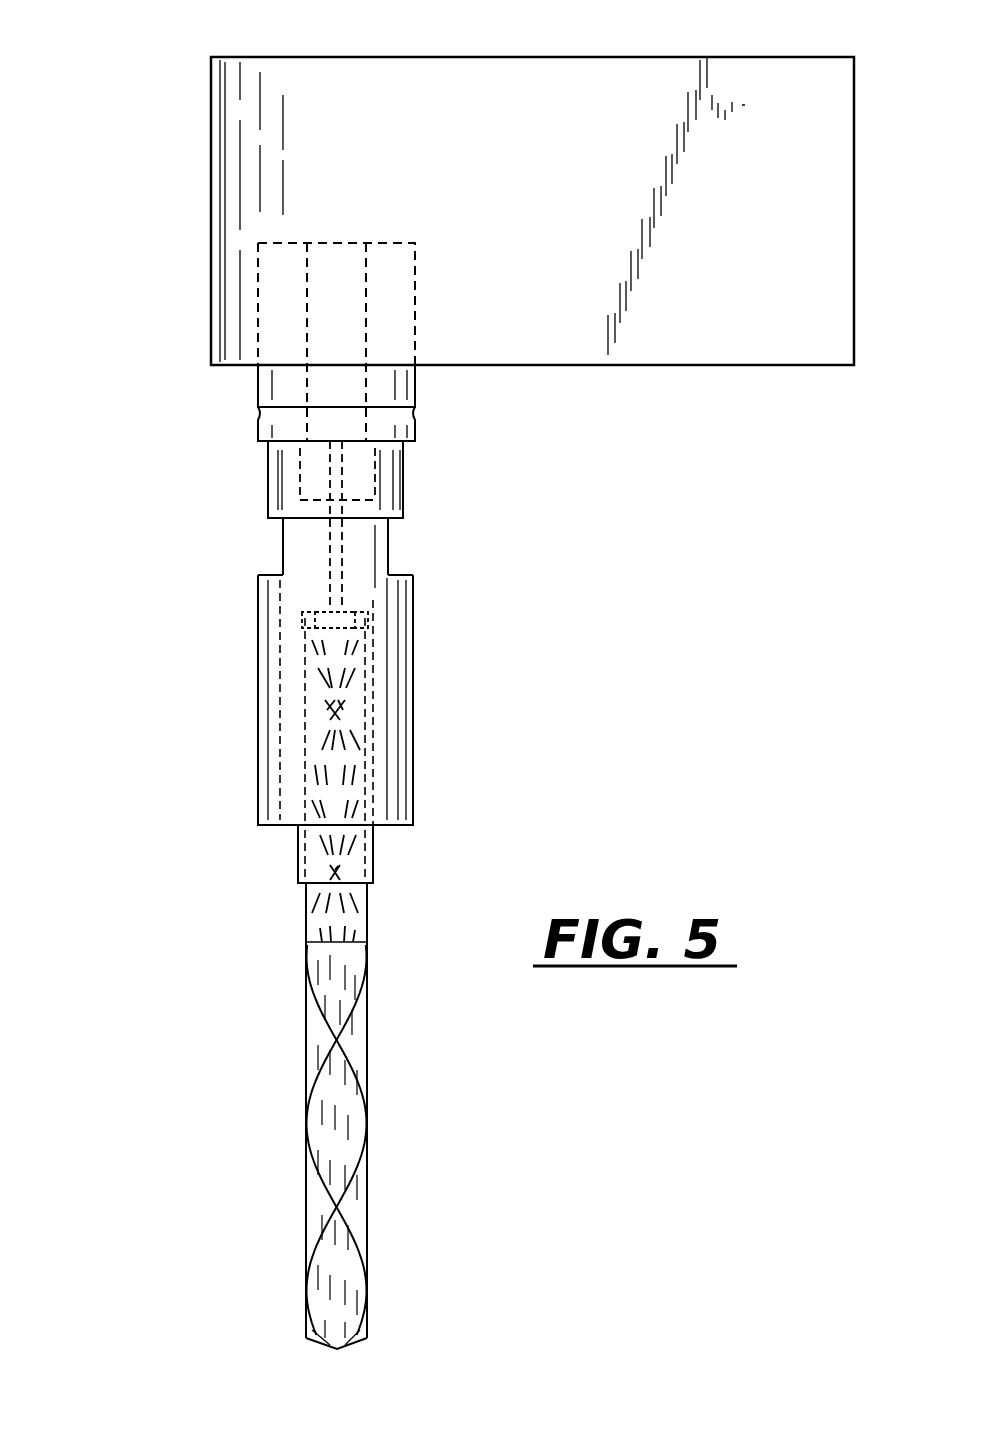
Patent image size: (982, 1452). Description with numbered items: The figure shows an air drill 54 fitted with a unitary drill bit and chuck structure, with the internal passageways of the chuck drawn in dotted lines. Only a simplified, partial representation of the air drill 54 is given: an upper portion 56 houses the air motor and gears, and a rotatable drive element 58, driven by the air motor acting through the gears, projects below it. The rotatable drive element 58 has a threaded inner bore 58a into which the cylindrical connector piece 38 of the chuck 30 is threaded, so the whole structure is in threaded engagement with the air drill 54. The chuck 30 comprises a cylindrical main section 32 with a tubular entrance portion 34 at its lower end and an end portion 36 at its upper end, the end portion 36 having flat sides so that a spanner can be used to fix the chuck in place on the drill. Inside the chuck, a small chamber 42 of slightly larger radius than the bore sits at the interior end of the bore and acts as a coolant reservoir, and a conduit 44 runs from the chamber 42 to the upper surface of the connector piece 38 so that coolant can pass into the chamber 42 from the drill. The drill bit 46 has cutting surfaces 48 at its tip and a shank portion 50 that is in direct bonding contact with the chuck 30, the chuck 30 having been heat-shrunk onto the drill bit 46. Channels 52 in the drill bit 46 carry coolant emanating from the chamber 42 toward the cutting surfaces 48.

The chuck 30 is at (379, 662).
The cylindrical main section 32 is at (393, 770).
The tubular entrance portion 34 is at (373, 862).
The end portion 36 is at (400, 538).
The cylindrical connector piece 38 is at (403, 472).
The small chamber 42 is at (302, 620).
The conduit 44 is at (330, 552).
The drill bit 46 is at (270, 1083).
The cutting surfaces 48 is at (313, 1248).
The shank portion 50 is at (305, 735).
The channels 52 is at (322, 805).
The air drill 54 is at (180, 313).
The upper portion 56 is at (632, 90).
The rotatable drive element 58 is at (258, 387).
The threaded inner bore 58a is at (300, 490).